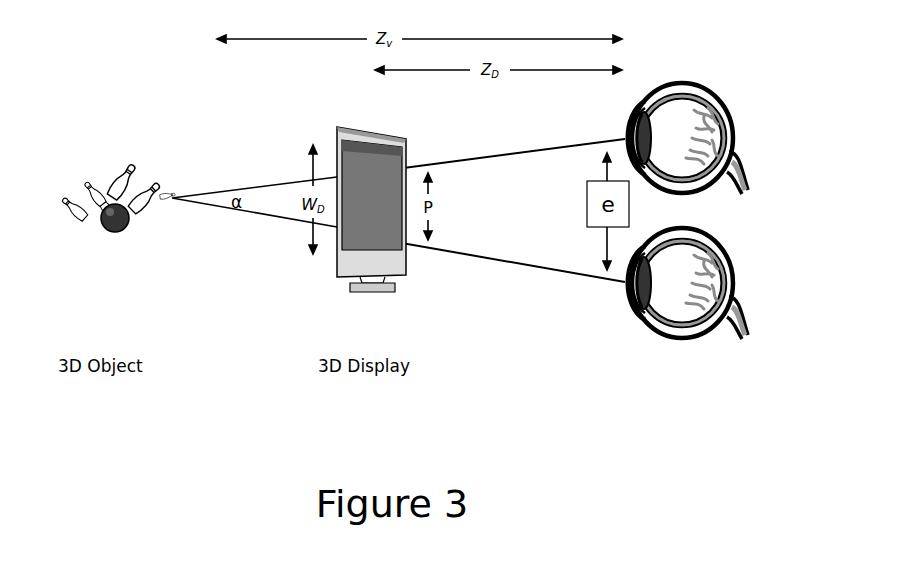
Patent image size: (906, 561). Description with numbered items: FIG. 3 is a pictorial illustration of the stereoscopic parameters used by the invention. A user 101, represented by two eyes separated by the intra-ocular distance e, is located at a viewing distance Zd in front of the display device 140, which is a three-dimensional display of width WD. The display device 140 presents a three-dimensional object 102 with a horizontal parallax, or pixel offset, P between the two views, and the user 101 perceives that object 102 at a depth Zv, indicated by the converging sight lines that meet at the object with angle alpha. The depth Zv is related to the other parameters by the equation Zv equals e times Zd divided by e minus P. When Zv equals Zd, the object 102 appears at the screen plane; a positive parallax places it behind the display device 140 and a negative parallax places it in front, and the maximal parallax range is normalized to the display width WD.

The user 101 is at (668, 382).
The 3D object 102 is at (136, 270).
The display device 140 is at (345, 134).